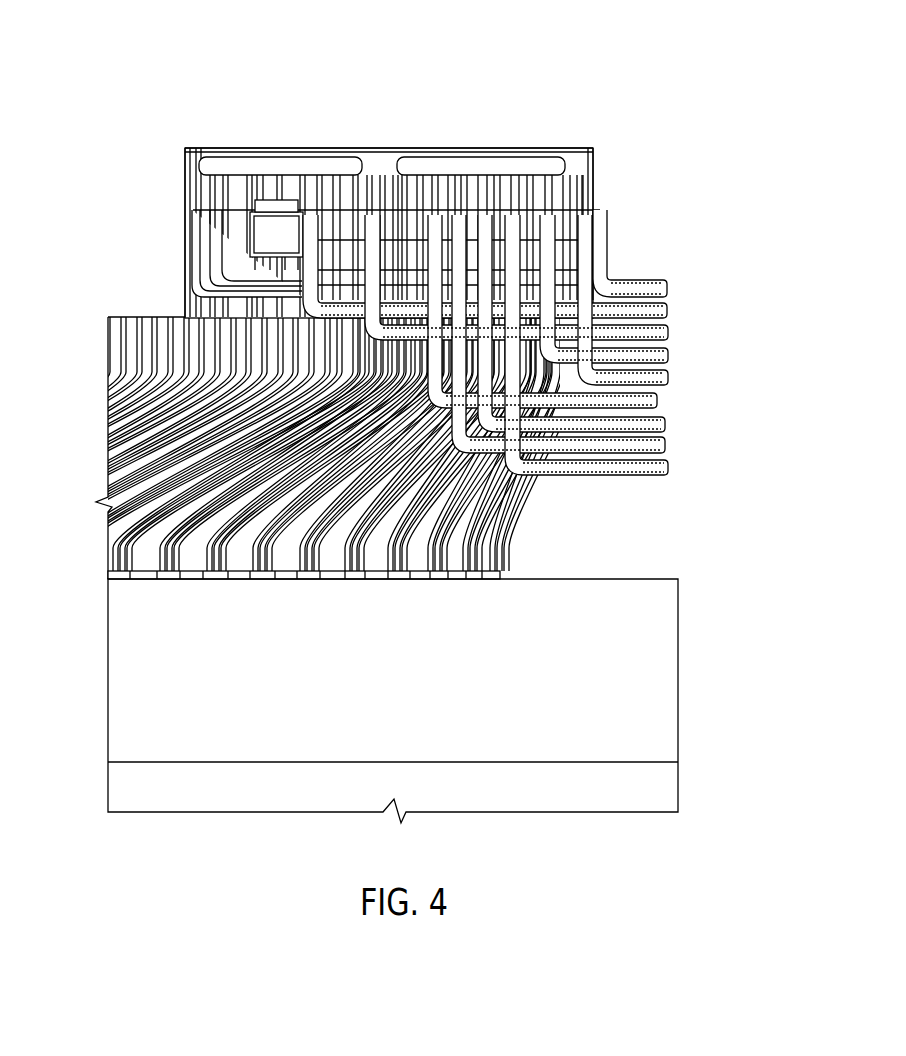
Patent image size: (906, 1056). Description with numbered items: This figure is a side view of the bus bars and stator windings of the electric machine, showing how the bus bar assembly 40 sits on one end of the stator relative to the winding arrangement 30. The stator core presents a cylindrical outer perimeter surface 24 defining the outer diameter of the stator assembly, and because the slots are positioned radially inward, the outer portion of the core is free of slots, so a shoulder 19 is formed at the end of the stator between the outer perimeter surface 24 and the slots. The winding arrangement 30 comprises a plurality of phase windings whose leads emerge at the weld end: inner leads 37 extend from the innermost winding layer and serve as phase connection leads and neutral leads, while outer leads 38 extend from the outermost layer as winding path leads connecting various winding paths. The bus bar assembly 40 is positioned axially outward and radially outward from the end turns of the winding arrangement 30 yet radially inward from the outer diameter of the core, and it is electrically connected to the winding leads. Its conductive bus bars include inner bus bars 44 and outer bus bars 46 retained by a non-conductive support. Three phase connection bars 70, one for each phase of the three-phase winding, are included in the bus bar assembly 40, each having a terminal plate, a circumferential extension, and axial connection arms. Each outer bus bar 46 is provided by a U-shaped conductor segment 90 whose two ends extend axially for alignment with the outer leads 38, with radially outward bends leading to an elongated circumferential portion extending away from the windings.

The shoulder 19 is at (648, 579).
The outer perimeter surface 24 is at (679, 718).
The winding arrangement 30 is at (93, 469).
The inner leads 37 is at (232, 148).
The outer leads 38 is at (592, 148).
The bus bar assembly 40 is at (645, 98).
The inner bus bars 44 is at (245, 222).
The outer bus bars 46 is at (606, 244).
The phase connection bar 70 is at (278, 165).
The U-shaped conductor segment 90 is at (668, 353).